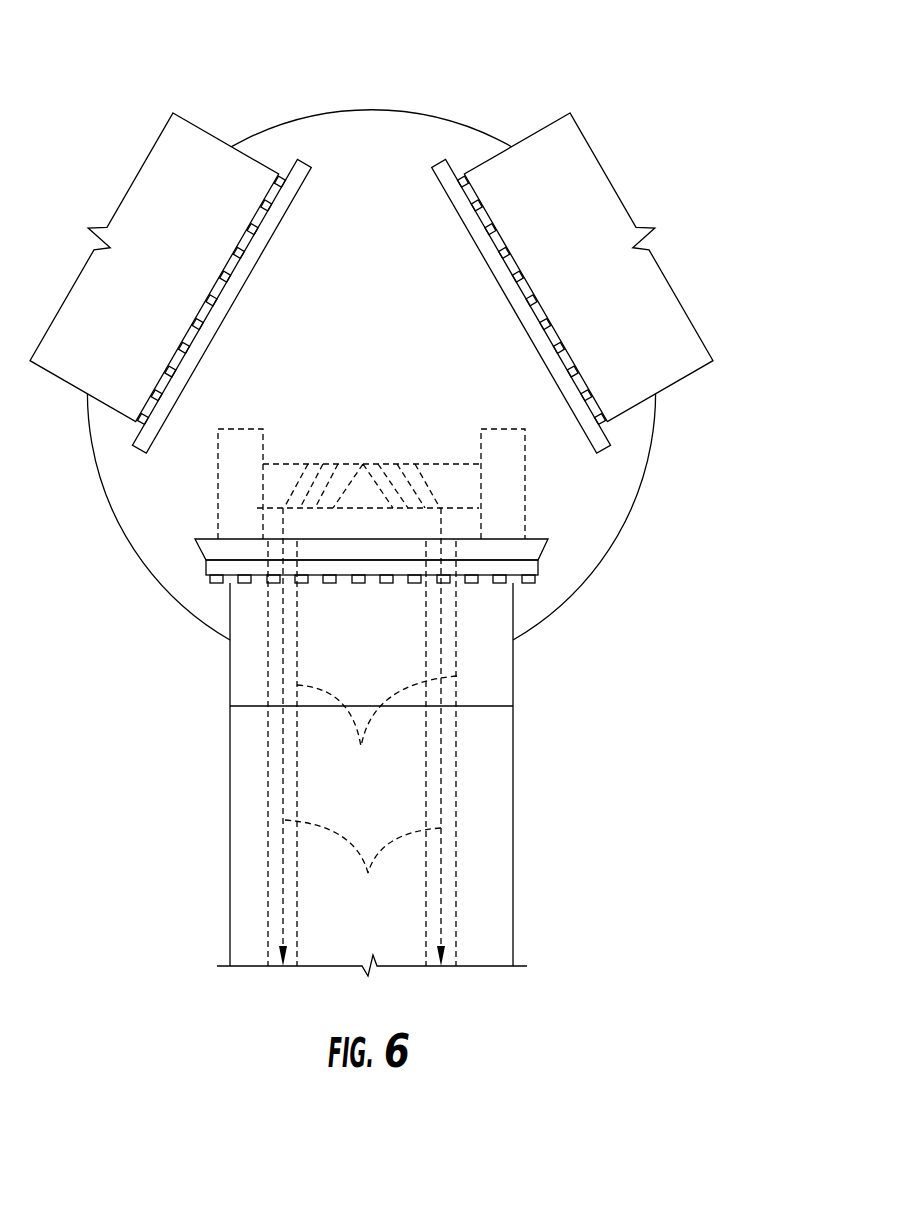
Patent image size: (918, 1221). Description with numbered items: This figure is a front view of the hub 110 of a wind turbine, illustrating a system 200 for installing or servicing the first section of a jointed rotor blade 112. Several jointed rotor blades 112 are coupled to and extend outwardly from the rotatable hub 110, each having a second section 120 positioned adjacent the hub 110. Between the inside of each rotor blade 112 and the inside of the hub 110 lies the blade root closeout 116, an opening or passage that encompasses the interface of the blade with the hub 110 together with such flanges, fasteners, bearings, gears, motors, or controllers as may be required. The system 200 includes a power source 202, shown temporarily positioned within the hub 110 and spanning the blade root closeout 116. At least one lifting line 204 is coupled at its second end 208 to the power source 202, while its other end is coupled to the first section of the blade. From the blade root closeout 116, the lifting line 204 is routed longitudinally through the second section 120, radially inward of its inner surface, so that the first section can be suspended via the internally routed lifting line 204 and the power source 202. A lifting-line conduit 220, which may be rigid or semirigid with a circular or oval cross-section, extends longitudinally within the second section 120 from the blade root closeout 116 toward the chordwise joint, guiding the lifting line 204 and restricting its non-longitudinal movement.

The system 200 is at (738, 128).
The hub 110 is at (308, 115).
The rotor blade 112 is at (150, 209).
The blade root closeout 116 is at (193, 564).
The second section 120 is at (488, 937).
The power source 202 is at (288, 436).
The lifting line 204 is at (363, 867).
The second end 208 is at (433, 523).
The lifting-line conduit 220 is at (377, 733).